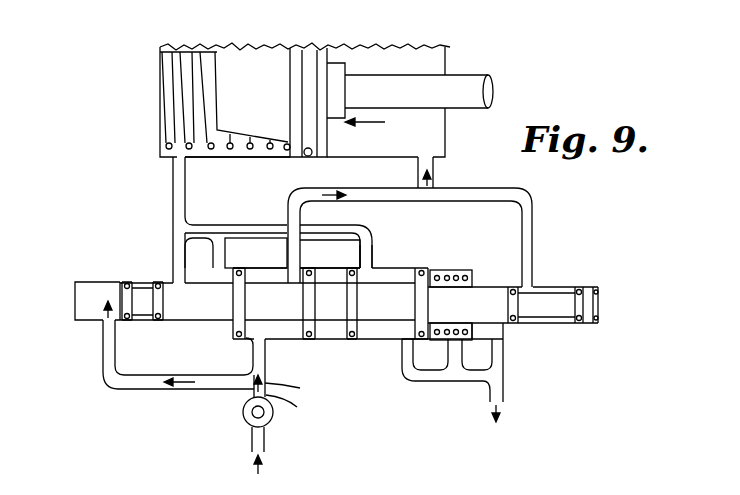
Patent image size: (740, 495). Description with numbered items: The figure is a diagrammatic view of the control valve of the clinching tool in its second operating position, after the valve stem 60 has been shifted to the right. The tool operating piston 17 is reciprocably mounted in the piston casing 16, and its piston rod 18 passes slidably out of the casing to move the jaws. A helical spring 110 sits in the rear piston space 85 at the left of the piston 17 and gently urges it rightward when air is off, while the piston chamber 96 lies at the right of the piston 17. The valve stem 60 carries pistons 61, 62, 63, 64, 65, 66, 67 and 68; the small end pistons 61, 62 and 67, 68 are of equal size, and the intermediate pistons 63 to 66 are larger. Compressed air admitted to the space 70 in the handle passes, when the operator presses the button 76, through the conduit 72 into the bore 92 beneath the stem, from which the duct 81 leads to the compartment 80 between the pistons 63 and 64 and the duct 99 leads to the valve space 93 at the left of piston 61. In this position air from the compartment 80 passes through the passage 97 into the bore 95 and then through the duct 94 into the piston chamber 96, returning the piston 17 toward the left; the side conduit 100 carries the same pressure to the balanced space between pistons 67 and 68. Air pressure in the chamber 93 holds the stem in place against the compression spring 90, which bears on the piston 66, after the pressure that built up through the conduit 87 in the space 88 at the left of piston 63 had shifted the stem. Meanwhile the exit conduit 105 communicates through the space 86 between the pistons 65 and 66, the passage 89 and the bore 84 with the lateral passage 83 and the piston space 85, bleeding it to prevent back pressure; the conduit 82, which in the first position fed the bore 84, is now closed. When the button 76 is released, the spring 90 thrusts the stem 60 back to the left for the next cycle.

The piston casing 16 is at (451, 47).
The piston 17 is at (291, 105).
The piston rod 18 is at (476, 80).
The spring 110 is at (166, 150).
The piston chamber 96 is at (424, 146).
The lateral passage 83 is at (173, 183).
The piston space 85 is at (225, 154).
The bore 84 is at (252, 230).
The conduit 87 is at (177, 247).
The duct 94 is at (417, 175).
The bore 95 is at (393, 194).
The passage 97 is at (301, 217).
The side conduit 100 is at (533, 232).
The passage 89 is at (365, 257).
The conduit 82 is at (222, 259).
The valve space 93 is at (80, 296).
The piston 61 is at (128, 281).
The piston 62 is at (163, 281).
The valve stem 60 is at (213, 311).
The piston 63 is at (238, 340).
The piston 64 is at (309, 341).
The piston 65 is at (349, 341).
The piston 66 is at (422, 270).
The piston 67 is at (513, 325).
The piston 68 is at (581, 325).
The compression spring 90 is at (455, 270).
The space 88 is at (180, 330).
The duct 99 is at (105, 350).
The bore 92 is at (154, 388).
The compartment 80 is at (285, 342).
The duct 81 is at (268, 381).
The conduit 72 is at (300, 398).
The button 76 is at (244, 418).
The space 70 is at (265, 435).
The space 86 is at (383, 335).
The exit conduit 105 is at (500, 393).